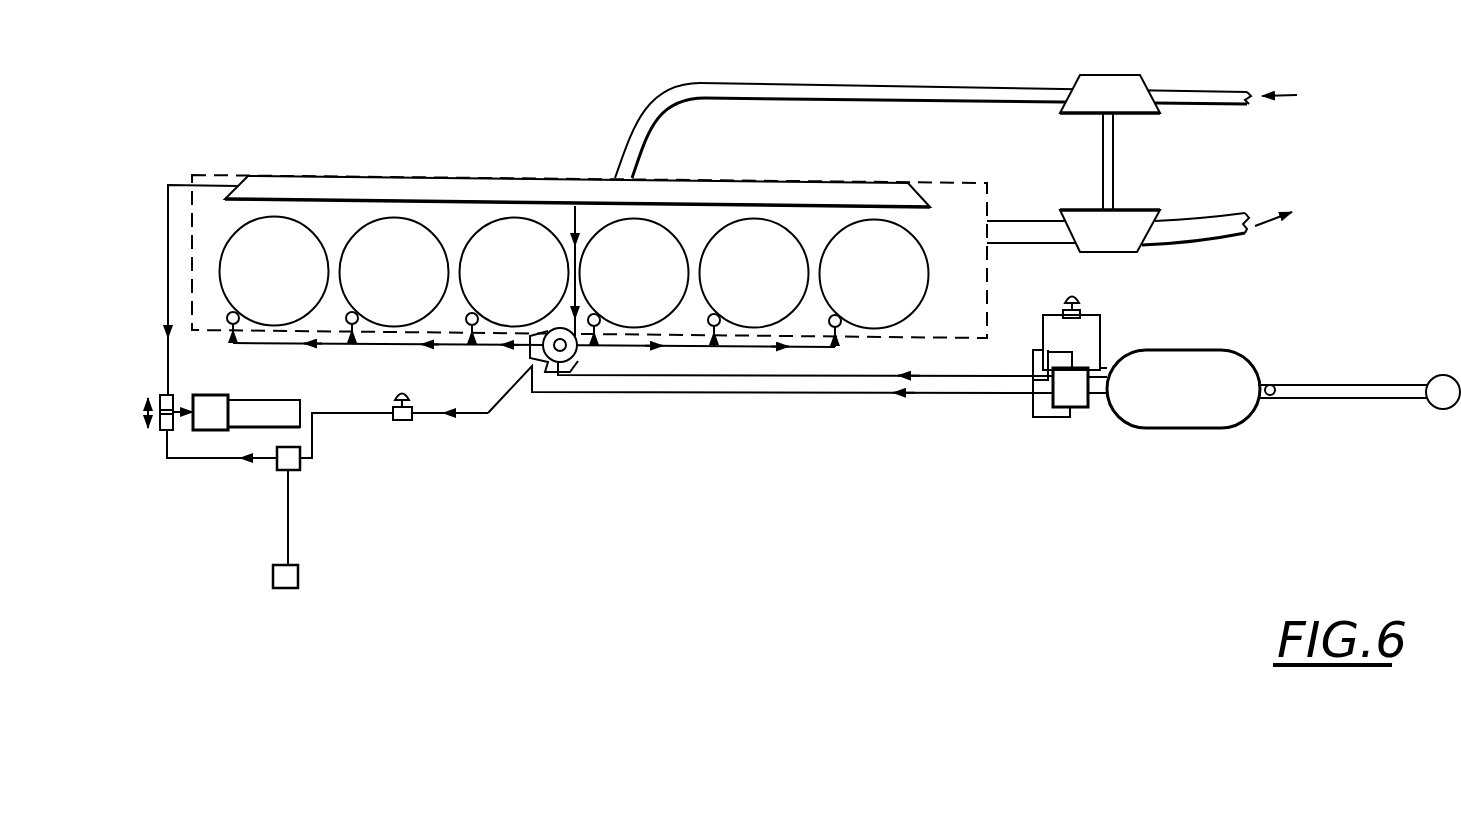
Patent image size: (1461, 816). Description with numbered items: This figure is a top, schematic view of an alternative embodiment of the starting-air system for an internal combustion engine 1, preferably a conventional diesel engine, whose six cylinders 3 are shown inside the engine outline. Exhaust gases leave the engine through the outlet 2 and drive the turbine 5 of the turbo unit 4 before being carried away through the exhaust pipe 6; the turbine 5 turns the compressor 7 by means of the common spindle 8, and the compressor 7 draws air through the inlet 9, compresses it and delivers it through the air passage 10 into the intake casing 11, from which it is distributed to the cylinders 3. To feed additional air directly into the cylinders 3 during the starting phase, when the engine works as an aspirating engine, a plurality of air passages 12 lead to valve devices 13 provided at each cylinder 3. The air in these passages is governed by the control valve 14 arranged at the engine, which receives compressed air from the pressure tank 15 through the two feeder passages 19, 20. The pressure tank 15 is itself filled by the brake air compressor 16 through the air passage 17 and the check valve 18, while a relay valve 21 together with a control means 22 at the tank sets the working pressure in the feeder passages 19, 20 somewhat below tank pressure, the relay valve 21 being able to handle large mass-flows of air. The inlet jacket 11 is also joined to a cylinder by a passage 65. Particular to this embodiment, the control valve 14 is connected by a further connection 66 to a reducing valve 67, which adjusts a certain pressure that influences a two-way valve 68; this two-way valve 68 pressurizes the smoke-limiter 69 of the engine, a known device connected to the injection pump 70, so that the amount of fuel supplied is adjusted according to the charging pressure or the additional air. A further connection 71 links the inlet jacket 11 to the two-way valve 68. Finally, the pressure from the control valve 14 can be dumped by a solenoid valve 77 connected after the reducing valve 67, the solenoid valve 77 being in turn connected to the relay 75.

The internal combustion engine 1 is at (945, 192).
The outlet 2 is at (1018, 230).
The cylinders 3 is at (857, 245).
The turbo unit 4 is at (1150, 166).
The turbine 5 is at (1130, 222).
The exhaust pipe 6 is at (1182, 238).
The compressor 7 is at (1068, 110).
The spindle 8 is at (1112, 135).
The inlet 9 is at (1200, 95).
The air passage 10 is at (697, 86).
The intake casing 11 is at (523, 188).
The air passages 12 is at (805, 350).
The valve devices 13 is at (706, 328).
The control valve 14 is at (577, 366).
The pressure tank 15 is at (1143, 417).
The brake air compressor 16 is at (1442, 403).
The air passage 17 is at (1357, 392).
The check valve 18 is at (1278, 403).
The feeder passage 19 is at (927, 395).
The feeder passage 20 is at (973, 378).
The relay valve 21 is at (1078, 400).
The control means 22 is at (1082, 313).
The passage 65 is at (575, 212).
The further connection 66 is at (467, 413).
The reducing valve 67 is at (398, 423).
The two-way valve 68 is at (163, 433).
The smoke-limiter 69 is at (213, 427).
The injection pump 70 is at (290, 394).
The further connection 71 is at (181, 183).
The relay 75 is at (273, 578).
The solenoid valve 77 is at (282, 465).